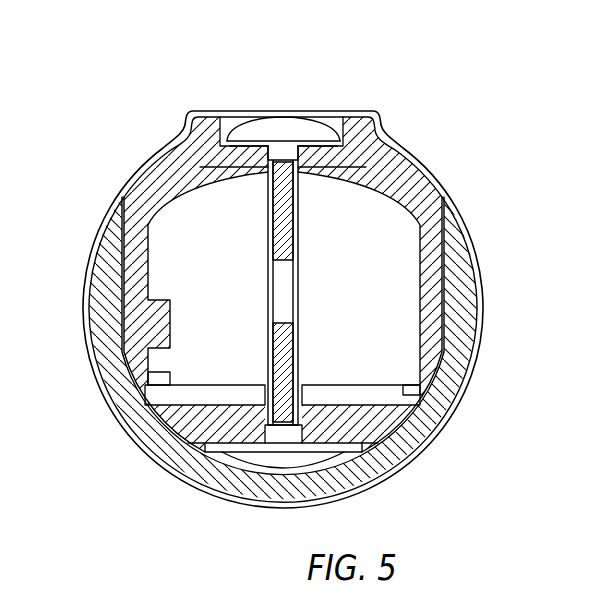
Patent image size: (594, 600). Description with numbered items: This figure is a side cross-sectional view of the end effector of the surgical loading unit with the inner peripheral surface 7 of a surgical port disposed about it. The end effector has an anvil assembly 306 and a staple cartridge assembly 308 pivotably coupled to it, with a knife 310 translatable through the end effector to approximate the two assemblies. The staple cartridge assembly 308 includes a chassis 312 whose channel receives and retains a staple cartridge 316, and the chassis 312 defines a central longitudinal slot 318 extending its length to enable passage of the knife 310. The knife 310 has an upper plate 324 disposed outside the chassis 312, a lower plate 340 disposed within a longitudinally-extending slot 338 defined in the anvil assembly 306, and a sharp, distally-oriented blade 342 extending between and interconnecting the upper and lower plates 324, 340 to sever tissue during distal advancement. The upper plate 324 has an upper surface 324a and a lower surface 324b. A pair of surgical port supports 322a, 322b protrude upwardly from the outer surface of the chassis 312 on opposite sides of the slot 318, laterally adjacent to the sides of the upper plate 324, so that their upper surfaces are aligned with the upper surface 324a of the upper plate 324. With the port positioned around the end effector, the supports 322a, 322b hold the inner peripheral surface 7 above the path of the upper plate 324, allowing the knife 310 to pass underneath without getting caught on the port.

The anvil assembly 306 is at (177, 428).
The staple cartridge assembly 308 is at (432, 177).
The knife 310 is at (306, 306).
The chassis 312 is at (163, 162).
The staple cartridge 316 is at (377, 376).
The central longitudinal slot 318 is at (258, 177).
The surgical port support 322a is at (372, 133).
The surgical port support 322b is at (199, 121).
The upper plate 324 is at (277, 108).
The upper surface 324a is at (313, 120).
The lower surface 324b is at (363, 118).
The longitudinally-extending slot 338 is at (232, 453).
The lower plate 340 is at (289, 447).
The blade 342 is at (297, 260).
The inner peripheral surface 7 is at (243, 110).